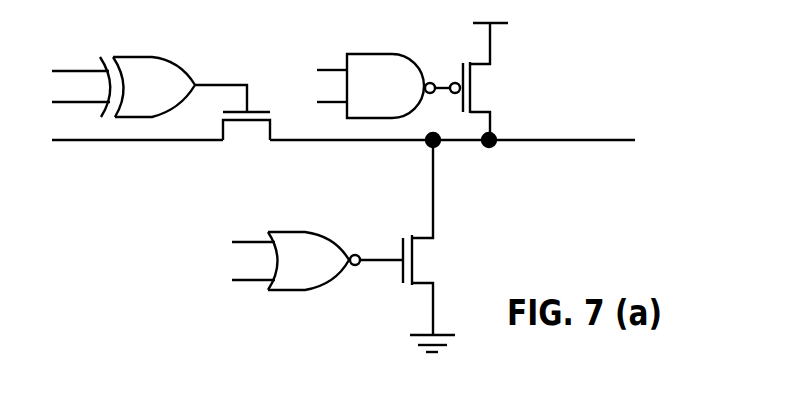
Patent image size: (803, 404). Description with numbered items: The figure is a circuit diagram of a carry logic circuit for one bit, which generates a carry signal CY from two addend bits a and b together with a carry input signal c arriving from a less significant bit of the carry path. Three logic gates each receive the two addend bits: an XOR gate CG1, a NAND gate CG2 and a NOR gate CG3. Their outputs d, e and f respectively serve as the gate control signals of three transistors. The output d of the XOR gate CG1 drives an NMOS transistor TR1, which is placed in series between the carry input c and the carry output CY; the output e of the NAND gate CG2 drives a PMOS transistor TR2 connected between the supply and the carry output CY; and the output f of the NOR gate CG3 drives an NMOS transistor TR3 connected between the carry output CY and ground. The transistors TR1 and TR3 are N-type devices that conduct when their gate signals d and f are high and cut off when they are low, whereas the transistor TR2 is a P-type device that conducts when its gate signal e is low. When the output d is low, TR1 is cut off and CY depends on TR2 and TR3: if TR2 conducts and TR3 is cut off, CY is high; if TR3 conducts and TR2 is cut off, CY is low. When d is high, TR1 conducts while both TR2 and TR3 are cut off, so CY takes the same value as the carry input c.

The XOR gate CG1 is at (114, 70).
The NAND gate CG2 is at (368, 67).
The NOR gate CG3 is at (287, 279).
The NMOS transistor TR1 is at (244, 144).
The PMOS transistor TR2 is at (503, 81).
The NMOS transistor TR3 is at (445, 246).
The carry signal CY is at (476, 140).
The carry input signal c is at (128, 137).
The output of XOR gate d is at (221, 83).
The output of NAND gate e is at (441, 67).
The output of NOR gate f is at (381, 237).